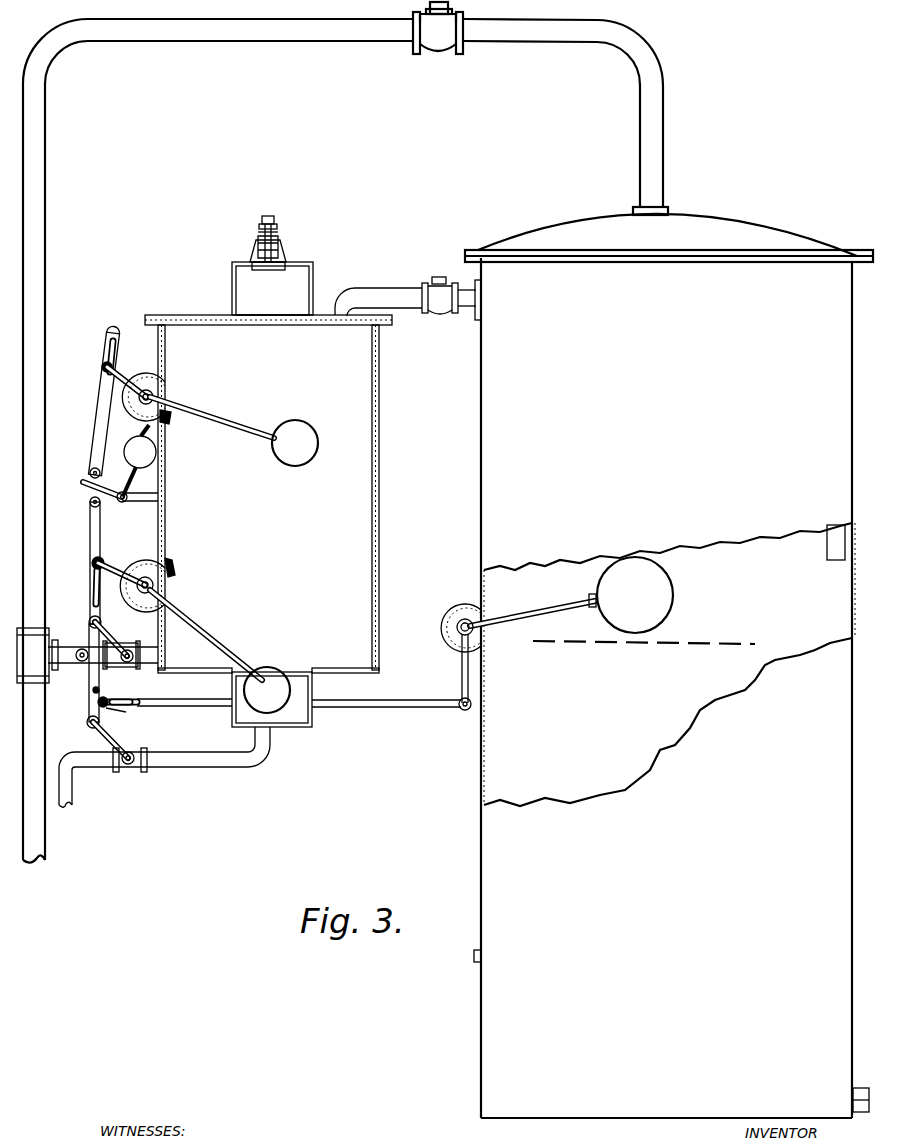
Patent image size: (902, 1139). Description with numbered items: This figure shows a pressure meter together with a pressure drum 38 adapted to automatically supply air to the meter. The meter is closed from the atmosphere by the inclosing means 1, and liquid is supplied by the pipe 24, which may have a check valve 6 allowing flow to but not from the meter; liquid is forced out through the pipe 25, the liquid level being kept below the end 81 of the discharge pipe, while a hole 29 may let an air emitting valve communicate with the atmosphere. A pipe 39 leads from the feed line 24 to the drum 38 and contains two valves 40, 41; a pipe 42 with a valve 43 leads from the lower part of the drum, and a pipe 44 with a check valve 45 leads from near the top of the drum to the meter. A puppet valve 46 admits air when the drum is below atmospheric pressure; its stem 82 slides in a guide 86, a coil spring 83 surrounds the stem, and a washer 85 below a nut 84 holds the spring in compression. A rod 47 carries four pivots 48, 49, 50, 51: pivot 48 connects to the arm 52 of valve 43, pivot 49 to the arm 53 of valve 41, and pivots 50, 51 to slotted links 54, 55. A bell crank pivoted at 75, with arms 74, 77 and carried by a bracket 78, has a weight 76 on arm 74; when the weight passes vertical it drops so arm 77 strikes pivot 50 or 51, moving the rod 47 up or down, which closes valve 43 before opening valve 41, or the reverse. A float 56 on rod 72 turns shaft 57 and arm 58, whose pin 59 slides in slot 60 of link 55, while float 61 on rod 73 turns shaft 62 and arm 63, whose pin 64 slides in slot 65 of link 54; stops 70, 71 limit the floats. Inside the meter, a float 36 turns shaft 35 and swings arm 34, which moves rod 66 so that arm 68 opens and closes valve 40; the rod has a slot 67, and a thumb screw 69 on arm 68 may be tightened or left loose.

The inclosing means 1 is at (479, 838).
The check valve 6 is at (438, 47).
The pipe 24 is at (318, 40).
The pipe 25 is at (861, 1095).
The hole 29 is at (474, 956).
The arm 34 is at (462, 682).
The shaft 35 is at (456, 638).
The float 36 is at (658, 604).
The pressure drum 38 is at (198, 316).
The pipe 39 is at (58, 668).
The valve 40 is at (80, 648).
The valve 41 is at (119, 645).
The pipe 42 is at (216, 763).
The valve 43 is at (132, 765).
The pipe 44 is at (366, 296).
The check valve 45 is at (442, 309).
The puppet valve 46 is at (270, 272).
The rod 47 is at (90, 538).
The pivot 48 is at (100, 724).
The pivot 49 is at (101, 623).
The pivot 50 is at (90, 503).
The pivot 51 is at (91, 473).
The arm 52 is at (93, 738).
The arm 53 is at (108, 680).
The slotted link 54 is at (100, 540).
The slotted link 55 is at (105, 410).
The float 56 is at (305, 440).
The shaft 57 is at (157, 394).
The arm 58 is at (124, 373).
The pin 59 is at (101, 367).
The slot 60 is at (109, 338).
The float 61 is at (266, 685).
The shaft 62 is at (155, 586).
The arm 63 is at (118, 572).
The pin 64 is at (93, 561).
The slot 65 is at (118, 592).
The rod 66 is at (366, 706).
The slot 67 is at (126, 699).
The arm 68 is at (108, 699).
The thumb screw 69 is at (122, 712).
The stop 70 is at (170, 419).
The stop 71 is at (172, 573).
The rod 72 is at (215, 420).
The rod 73 is at (208, 640).
The arm 74 is at (140, 481).
The pivot 75 is at (126, 502).
The weight 76 is at (140, 446).
The arm 77 is at (104, 482).
The bracket 78 is at (160, 497).
The end 81 is at (830, 563).
The stem 82 is at (273, 222).
The coil spring 83 is at (280, 243).
The nut 84 is at (266, 227).
The washer 85 is at (260, 231).
The guide 86 is at (285, 252).